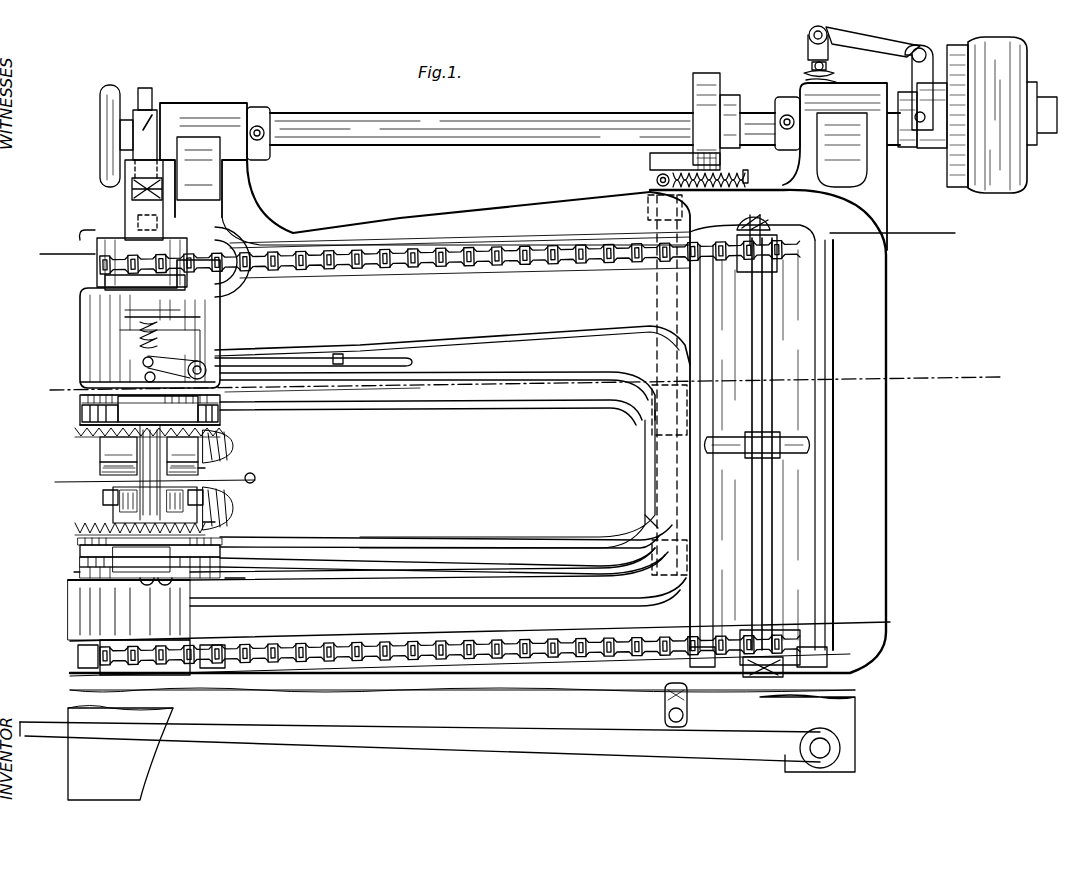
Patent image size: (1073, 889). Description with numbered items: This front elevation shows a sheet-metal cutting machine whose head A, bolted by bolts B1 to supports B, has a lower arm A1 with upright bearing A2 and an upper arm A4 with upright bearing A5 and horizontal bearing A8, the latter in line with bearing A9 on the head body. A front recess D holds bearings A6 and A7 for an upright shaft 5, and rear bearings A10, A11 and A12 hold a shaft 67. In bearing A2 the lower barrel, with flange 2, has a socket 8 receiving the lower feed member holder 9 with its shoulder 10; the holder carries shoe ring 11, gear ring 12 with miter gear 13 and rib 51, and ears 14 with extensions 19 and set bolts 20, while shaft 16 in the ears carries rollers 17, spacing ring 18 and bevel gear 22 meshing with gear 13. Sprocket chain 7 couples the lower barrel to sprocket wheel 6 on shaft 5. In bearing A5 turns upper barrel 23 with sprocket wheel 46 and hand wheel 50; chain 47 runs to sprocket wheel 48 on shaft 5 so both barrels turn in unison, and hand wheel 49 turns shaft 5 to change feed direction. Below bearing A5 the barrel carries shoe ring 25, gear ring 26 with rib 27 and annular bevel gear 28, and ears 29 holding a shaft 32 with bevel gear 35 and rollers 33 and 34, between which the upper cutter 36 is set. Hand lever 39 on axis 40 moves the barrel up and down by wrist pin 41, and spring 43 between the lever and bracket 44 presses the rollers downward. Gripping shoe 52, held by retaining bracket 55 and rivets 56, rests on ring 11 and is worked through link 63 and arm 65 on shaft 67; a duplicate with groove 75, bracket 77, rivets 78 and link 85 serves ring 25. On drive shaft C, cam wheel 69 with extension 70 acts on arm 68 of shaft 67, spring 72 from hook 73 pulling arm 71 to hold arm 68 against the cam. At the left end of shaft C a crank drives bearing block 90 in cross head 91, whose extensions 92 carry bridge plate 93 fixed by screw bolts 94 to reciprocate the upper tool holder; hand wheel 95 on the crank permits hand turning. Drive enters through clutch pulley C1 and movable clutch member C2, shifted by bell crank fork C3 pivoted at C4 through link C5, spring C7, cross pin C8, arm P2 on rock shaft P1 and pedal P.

The shaft C is at (585, 116).
The housing bracket A8 is at (210, 112).
The hand wheel 95 is at (104, 126).
The collar 90 is at (128, 118).
The cap 94 is at (143, 86).
The stem 93 is at (150, 108).
The pin 92 is at (152, 113).
The nut bracket 91 is at (130, 190).
The upper chain 47 is at (495, 268).
The upper sprocket 46 is at (97, 264).
The guard lip 50 is at (88, 240).
The sprocket hub 23 is at (105, 283).
The shaft 5 is at (770, 305).
The gear housing A is at (119, 324).
The housing wall A5 is at (90, 300).
The plate 44 is at (125, 317).
The spring 43 is at (140, 338).
The gear band 75 is at (80, 412).
The frame bracket 6 is at (215, 362).
The rod 39 is at (290, 368).
The lever end 40 is at (205, 364).
The lever 41 is at (147, 368).
The pivot 78 is at (152, 372).
The housing A2 is at (100, 382).
The axis 7 is at (433, 689).
The gear 25 is at (100, 398).
The hub 77 is at (158, 409).
The gear 27 is at (82, 412).
The gear 26 is at (100, 425).
The bearing 14 is at (215, 412).
The gear teeth 28 is at (95, 436).
The bevel gear hub 29 is at (98, 452).
The bevel pinion 35 is at (233, 440).
The ring 36 is at (100, 462).
The ring 33 is at (105, 475).
The washer 32 is at (205, 470).
The pin 34 is at (255, 475).
The rail 8 is at (148, 481).
The carrier frame 17 is at (140, 512).
The pinion 19 is at (154, 500).
The pin 20 is at (103, 497).
The bevel pinion 16 is at (233, 506).
The hub 22 is at (233, 520).
The gear teeth 13 is at (100, 528).
The rail 9 is at (78, 540).
The bracket arm 63 is at (450, 541).
The band 51 is at (78, 541).
The gear 12 is at (100, 550).
The sprocket hub 55 is at (150, 559).
The rail 10 is at (80, 561).
The band 52 is at (80, 572).
The pin 56 is at (150, 580).
The rail end 11 is at (238, 569).
The band 2 is at (70, 569).
The bracket arm A4 is at (475, 372).
The rod 85 is at (322, 408).
The bracket arm A1 is at (375, 575).
The dashed rod 67 is at (648, 183).
The block A10 is at (652, 196).
The block A11 is at (652, 425).
The block A12 is at (652, 550).
The corner 65 is at (648, 523).
The plate 68 is at (690, 162).
The pivot 71 is at (657, 178).
The spring 72 is at (718, 175).
The end plate 73 is at (747, 170).
The collar 69 is at (712, 75).
The collar 70 is at (700, 105).
The housing A9 is at (810, 110).
The pivot C5 is at (808, 43).
The nut C8 is at (812, 65).
The washer C7 is at (806, 74).
The lever C3 is at (880, 42).
The link C4 is at (920, 50).
The clutch collar C2 is at (947, 177).
The drum C1 is at (1000, 188).
The cylinder D is at (785, 335).
The hub 49 is at (807, 447).
The boss A6 is at (768, 216).
The sprocket 48 is at (748, 262).
The plate 18 is at (70, 641).
The clamp B1 is at (78, 660).
The anchor A7 is at (760, 690).
The base B is at (459, 744).
The pedal lever P is at (380, 738).
The pivot P1 is at (840, 745).
The eye P2 is at (708, 730).